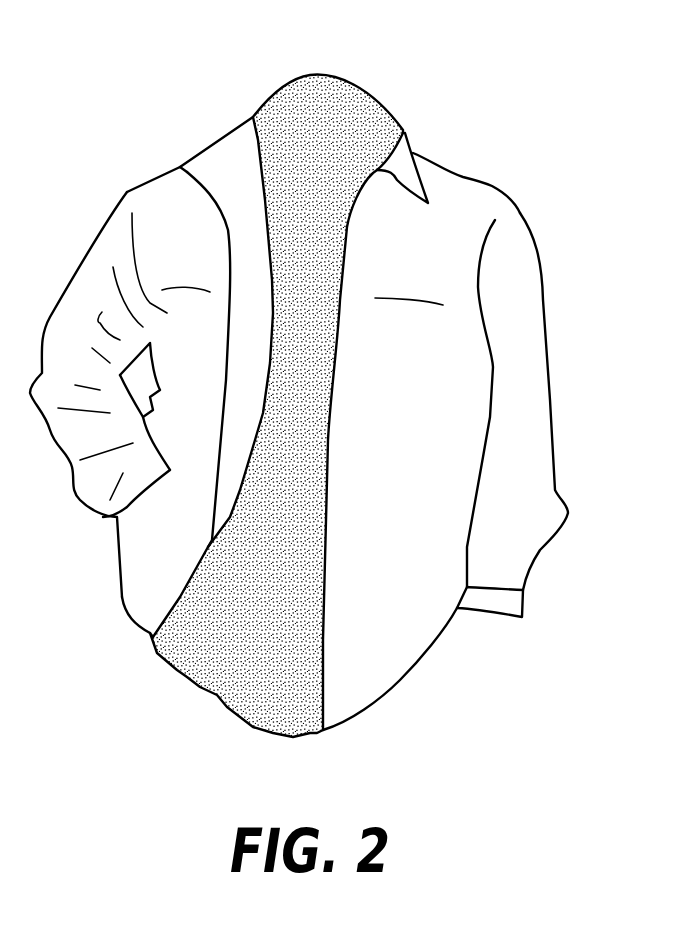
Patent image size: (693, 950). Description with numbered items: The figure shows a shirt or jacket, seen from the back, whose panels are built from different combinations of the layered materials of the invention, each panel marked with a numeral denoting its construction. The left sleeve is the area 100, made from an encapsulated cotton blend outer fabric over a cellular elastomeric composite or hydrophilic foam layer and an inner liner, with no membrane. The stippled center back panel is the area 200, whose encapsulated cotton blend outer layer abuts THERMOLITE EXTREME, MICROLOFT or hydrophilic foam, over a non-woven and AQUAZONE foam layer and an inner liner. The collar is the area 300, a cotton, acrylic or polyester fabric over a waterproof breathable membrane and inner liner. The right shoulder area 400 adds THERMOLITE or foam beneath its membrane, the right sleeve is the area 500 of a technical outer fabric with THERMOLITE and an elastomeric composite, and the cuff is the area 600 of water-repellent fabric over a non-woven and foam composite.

The apparel area of encapsulated cotton blend with foam composite 100 is at (227, 177).
The apparel area of encapsulated cotton blend abutting insulation or foam 200 is at (363, 100).
The apparel area of fabric with waterproof breathable membrane 300 is at (407, 123).
The apparel area of blend fabric with membrane and insulation 400 is at (467, 210).
The apparel area of technical outer fabric with THERMOLITE and elastomeric composite 500 is at (525, 423).
The apparel area of water-repellent fabric with foam composite 600 is at (515, 602).